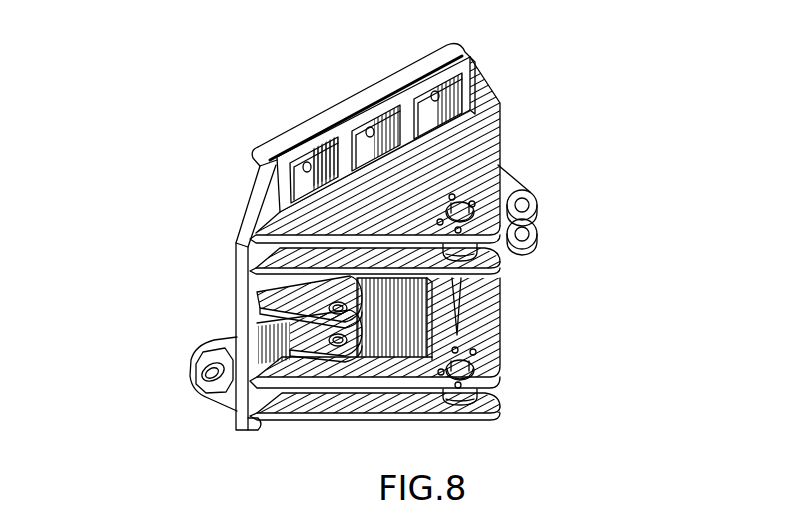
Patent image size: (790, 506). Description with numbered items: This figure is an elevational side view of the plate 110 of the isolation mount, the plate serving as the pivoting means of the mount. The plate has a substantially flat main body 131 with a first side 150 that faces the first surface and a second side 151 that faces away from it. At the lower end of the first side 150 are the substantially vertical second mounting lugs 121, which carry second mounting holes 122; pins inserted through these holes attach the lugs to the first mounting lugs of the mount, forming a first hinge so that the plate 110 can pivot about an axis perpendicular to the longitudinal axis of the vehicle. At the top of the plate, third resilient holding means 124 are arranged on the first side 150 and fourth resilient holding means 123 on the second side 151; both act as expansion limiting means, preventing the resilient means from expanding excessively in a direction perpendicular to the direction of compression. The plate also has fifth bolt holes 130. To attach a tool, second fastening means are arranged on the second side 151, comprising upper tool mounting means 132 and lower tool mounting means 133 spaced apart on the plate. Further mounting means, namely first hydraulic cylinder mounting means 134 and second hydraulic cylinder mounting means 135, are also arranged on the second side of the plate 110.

The plate 110 is at (513, 80).
The second mounting lugs 121 is at (197, 351).
The second mounting holes 122 is at (210, 397).
The fourth resilient holding means 123 is at (308, 163).
The third resilient holding means 124 is at (272, 141).
The fifth bolt holes 130 is at (328, 170).
The main body 131 is at (242, 260).
The upper tool mounting means 132 is at (473, 188).
The lower plates 133 is at (488, 340).
The first hydraulic cylinder mounting means 134 is at (540, 200).
The second hydraulic cylinder mounting means 135 is at (312, 293).
The first side 150 is at (197, 283).
The second side 151 is at (272, 430).